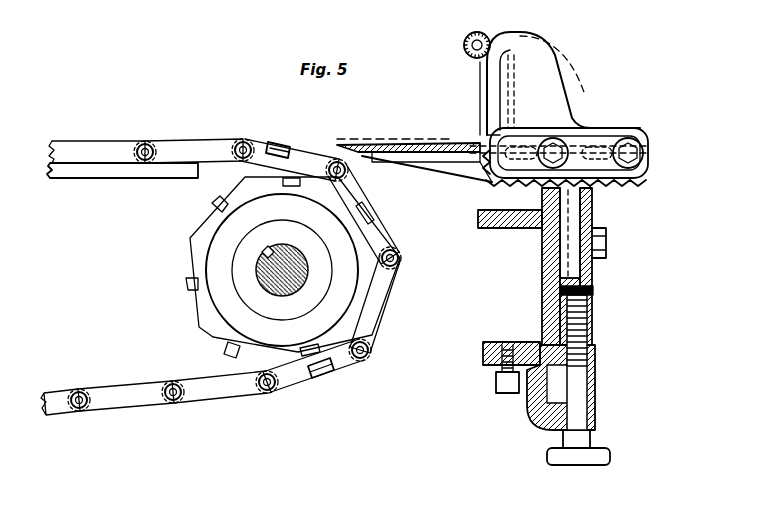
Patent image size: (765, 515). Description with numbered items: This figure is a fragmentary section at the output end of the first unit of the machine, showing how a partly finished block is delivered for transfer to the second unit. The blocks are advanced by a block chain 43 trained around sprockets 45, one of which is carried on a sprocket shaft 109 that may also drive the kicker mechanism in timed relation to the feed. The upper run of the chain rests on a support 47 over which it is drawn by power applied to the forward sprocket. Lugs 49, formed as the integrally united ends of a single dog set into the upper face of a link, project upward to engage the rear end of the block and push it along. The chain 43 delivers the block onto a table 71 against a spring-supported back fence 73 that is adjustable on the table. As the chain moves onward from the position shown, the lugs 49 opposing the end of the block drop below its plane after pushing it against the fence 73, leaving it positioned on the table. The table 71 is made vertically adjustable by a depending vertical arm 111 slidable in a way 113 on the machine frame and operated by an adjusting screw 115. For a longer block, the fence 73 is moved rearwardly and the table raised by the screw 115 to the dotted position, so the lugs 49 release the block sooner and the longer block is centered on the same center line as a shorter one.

The block chain 43 is at (177, 149).
The support 47 is at (105, 170).
The lugs 49 is at (284, 141).
The sprockets 45 is at (215, 262).
The sprocket shaft 109 is at (264, 284).
The table 71 is at (410, 150).
The back fence 73 is at (487, 106).
The vertical arm 111 is at (592, 287).
The way 113 is at (548, 222).
The adjusting screw 115 is at (580, 387).